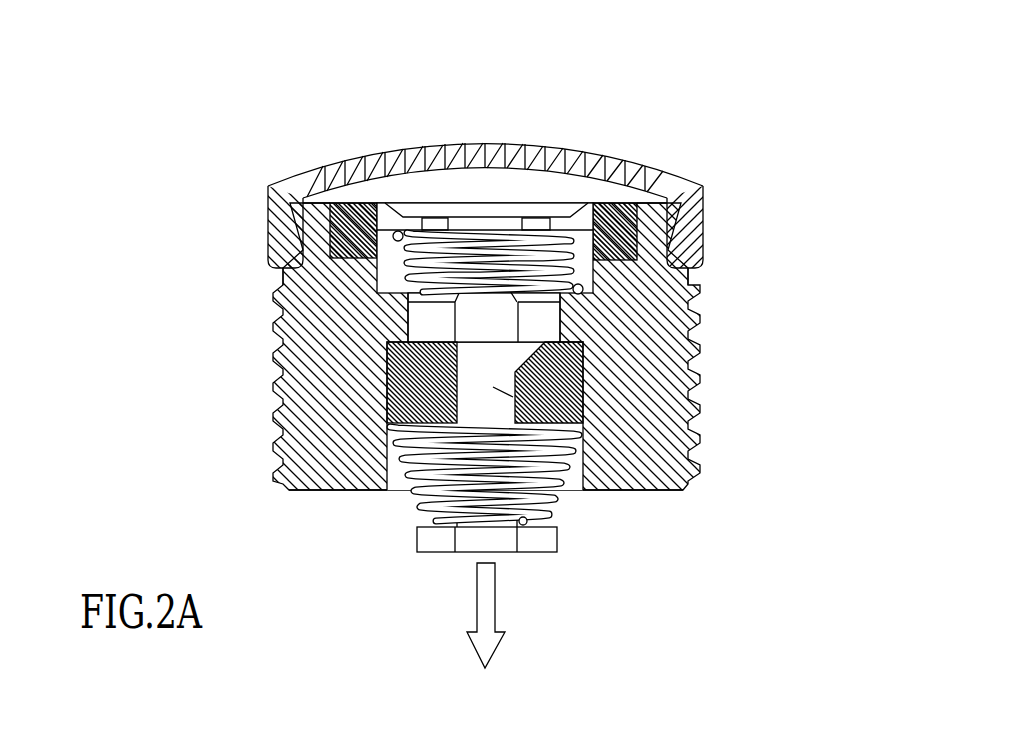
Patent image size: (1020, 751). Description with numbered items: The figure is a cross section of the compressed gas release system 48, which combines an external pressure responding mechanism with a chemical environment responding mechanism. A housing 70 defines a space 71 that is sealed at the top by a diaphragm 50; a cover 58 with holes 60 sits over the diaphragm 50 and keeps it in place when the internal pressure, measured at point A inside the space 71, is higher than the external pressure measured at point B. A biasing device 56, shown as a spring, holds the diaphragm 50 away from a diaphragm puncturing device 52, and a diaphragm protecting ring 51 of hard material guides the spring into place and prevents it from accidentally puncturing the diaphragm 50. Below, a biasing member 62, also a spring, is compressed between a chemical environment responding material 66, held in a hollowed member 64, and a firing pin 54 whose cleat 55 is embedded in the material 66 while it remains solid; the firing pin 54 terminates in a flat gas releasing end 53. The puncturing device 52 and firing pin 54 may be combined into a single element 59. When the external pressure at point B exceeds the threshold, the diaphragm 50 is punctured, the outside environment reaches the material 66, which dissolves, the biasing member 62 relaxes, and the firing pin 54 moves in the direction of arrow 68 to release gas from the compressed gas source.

The compressed gas release system 48 is at (176, 106).
The diaphragm 50 is at (612, 203).
The diaphragm protecting ring 51 is at (378, 258).
The diaphragm puncturing device 52 is at (400, 207).
The gas releasing end 53 is at (472, 553).
The firing pin 54 is at (522, 205).
The cleat 55 is at (688, 377).
The biasing device 56 is at (688, 284).
The cover 58 is at (704, 190).
The single element 59 is at (613, 492).
The holes 60 is at (350, 172).
The biasing member 62 is at (420, 482).
The hollowed member 64 is at (347, 492).
The chemical environment responding material 66 is at (653, 402).
The arrow 68 is at (487, 598).
The housing 70 is at (667, 447).
The space 71 is at (545, 308).
The point A is at (430, 313).
The point B is at (506, 210).